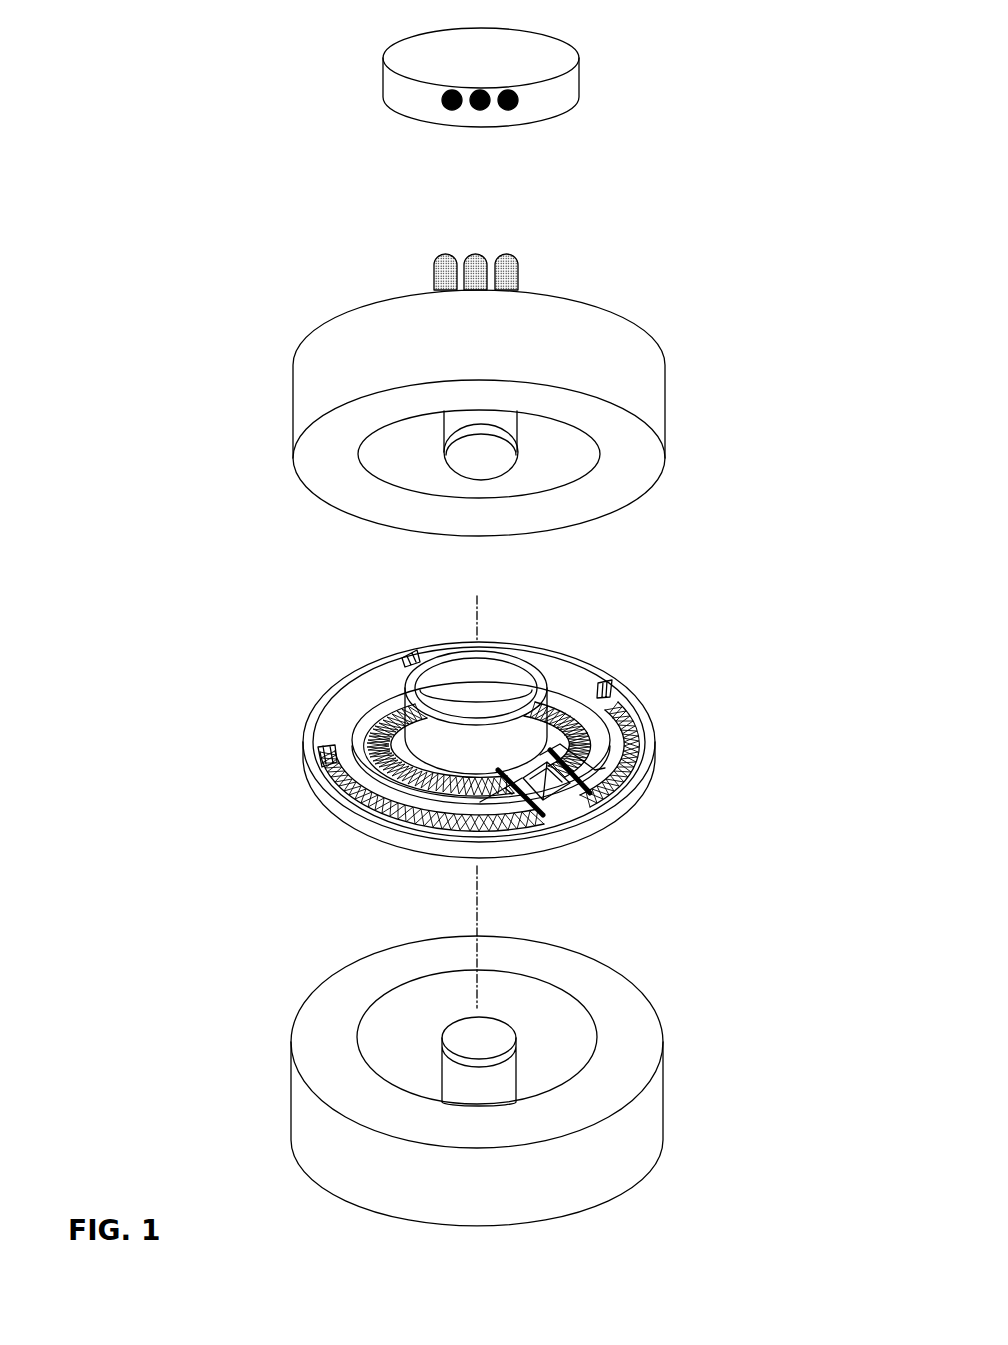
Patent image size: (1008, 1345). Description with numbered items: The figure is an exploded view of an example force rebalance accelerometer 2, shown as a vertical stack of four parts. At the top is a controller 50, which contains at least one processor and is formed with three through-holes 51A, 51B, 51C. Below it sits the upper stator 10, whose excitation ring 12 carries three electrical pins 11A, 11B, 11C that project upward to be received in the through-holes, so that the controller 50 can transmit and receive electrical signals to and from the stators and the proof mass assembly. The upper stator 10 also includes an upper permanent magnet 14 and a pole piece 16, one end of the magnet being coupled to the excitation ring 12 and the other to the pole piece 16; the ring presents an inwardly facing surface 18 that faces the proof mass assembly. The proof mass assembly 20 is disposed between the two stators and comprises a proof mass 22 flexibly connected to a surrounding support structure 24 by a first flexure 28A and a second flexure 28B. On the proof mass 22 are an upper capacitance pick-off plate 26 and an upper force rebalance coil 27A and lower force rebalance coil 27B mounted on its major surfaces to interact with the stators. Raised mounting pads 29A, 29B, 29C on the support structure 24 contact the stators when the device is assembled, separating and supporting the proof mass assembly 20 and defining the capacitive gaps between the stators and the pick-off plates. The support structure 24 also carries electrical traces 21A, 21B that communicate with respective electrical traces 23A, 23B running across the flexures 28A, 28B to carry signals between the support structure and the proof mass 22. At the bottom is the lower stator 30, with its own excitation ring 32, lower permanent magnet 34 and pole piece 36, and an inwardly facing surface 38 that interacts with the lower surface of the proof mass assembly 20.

The accelerometer 2 is at (137, 58).
The controller 50 is at (532, 92).
The through-hole 51A is at (514, 108).
The through-hole 51B is at (480, 110).
The through-hole 51C is at (446, 108).
The upper stator 10 is at (554, 375).
The electrical pin 11A is at (509, 263).
The electrical pin 11B is at (475, 262).
The electrical pin 11C is at (446, 264).
The excitation ring 12 is at (303, 392).
The upper permanent magnet 14 is at (449, 424).
The pole piece 16 is at (497, 456).
The inwardly facing surface 18 is at (630, 492).
The proof mass assembly 20 is at (557, 751).
The electrical trace 21A is at (623, 773).
The electrical trace 21B is at (347, 792).
The proof mass 22 is at (580, 710).
The electrical trace 23A is at (592, 796).
The electrical trace 23B is at (546, 818).
The support structure 24 is at (390, 663).
The upper capacitance pick-off plate 26 is at (368, 720).
The upper force rebalance coil 27A is at (510, 650).
The lower force rebalance coil 27B is at (457, 858).
The first flexure 28A is at (578, 757).
The second flexure 28B is at (508, 802).
The mounting pad 29A is at (606, 689).
The mounting pad 29B is at (320, 751).
The mounting pad 29C is at (410, 657).
The lower stator 30 is at (555, 1081).
The excitation ring 32 is at (302, 1118).
The lower permanent magnet 34 is at (450, 1082).
The pole piece 36 is at (484, 1028).
The inwardly facing surface 38 is at (620, 980).